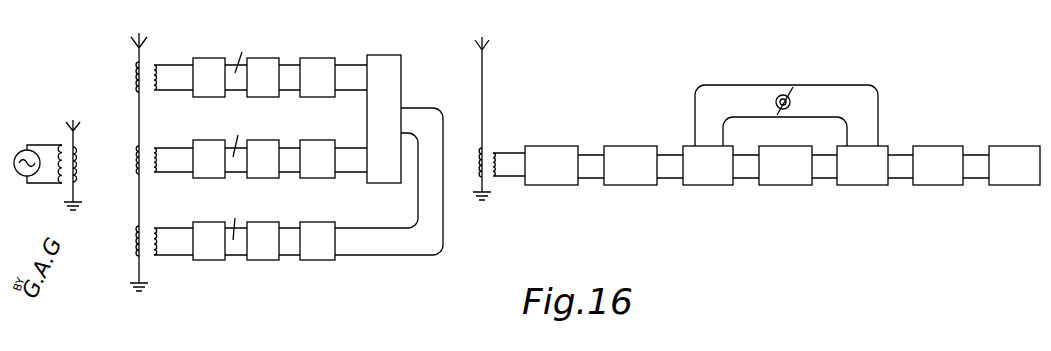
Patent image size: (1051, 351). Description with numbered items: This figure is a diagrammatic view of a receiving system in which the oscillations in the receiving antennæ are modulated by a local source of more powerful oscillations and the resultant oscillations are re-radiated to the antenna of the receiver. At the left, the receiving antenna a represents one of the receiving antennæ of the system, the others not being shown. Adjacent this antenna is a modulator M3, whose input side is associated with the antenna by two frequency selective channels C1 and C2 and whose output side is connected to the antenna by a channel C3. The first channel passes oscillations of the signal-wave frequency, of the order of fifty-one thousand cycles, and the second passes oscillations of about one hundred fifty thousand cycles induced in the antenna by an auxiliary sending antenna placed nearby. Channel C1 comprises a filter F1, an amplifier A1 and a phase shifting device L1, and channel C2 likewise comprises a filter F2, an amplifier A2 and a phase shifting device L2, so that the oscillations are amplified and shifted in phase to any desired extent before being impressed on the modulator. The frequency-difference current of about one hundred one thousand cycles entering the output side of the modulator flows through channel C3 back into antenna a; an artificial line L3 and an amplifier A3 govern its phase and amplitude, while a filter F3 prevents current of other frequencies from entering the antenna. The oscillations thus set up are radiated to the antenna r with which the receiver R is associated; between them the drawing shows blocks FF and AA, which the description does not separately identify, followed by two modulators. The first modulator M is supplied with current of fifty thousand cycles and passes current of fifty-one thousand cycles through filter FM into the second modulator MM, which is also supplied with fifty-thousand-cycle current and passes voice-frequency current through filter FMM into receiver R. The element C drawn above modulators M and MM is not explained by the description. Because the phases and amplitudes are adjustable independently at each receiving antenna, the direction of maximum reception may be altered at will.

The receiving antenna a is at (135, 157).
The frequency selective channel C1 is at (247, 51).
The frequency selective channel C2 is at (241, 134).
The output channel C3 is at (241, 217).
The filter F1 is at (209, 77).
The amplifier A1 is at (263, 77).
The phase shifting device L1 is at (317, 77).
The filter F2 is at (209, 159).
The amplifier A2 is at (263, 159).
The phase shifting device L2 is at (317, 159).
The filter F3 is at (209, 241).
The amplifier A3 is at (263, 241).
The artificial line L3 is at (317, 241).
The modulator M3 is at (384, 119).
The antenna r is at (478, 152).
The filter FF'' FF is at (551, 165).
The amplifier AA'' AA is at (630, 165).
The modulator M is at (708, 165).
The filter FM is at (785, 165).
The second modulator MM is at (862, 165).
The filter FMM is at (938, 165).
The receiver R is at (1014, 165).
The coupling/oscillator connection C'' C is at (782, 95).